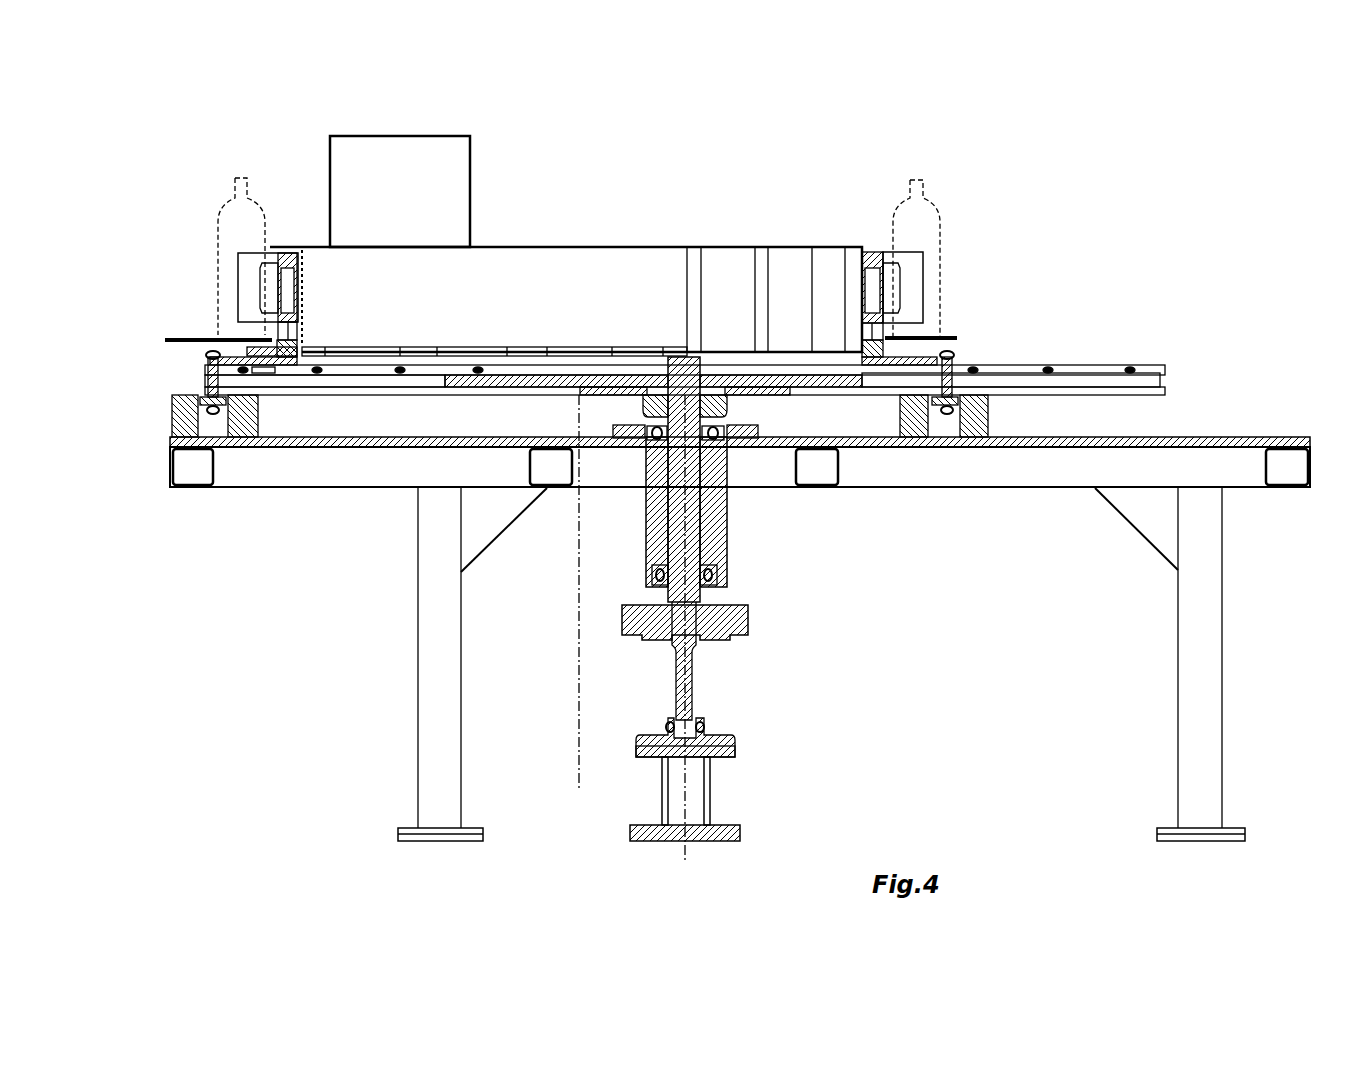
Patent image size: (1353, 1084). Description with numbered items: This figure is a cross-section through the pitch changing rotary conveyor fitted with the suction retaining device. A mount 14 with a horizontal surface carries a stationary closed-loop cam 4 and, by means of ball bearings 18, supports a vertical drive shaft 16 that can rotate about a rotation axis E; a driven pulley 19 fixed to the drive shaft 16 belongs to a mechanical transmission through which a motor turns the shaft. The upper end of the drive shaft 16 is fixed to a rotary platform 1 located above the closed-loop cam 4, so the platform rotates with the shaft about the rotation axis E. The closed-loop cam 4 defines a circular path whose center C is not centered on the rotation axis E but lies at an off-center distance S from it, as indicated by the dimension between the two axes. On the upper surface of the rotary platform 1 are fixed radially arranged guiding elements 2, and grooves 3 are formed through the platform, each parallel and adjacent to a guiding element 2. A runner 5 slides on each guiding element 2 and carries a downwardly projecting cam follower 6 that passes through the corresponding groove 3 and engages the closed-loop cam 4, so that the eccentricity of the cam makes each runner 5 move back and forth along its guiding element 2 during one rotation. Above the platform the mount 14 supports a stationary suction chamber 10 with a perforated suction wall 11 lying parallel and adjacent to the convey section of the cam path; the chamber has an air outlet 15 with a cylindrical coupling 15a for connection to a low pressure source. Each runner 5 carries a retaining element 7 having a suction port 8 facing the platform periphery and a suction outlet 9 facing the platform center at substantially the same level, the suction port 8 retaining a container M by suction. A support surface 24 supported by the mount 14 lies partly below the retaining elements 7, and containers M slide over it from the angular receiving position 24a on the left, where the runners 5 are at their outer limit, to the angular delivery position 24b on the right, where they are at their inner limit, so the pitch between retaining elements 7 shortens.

The rotary platform 1 is at (826, 397).
The guiding elements 2 is at (335, 372).
The grooves 3 is at (380, 390).
The closed-loop cam 4 is at (975, 410).
The runner 5 is at (280, 372).
The cam follower 6 is at (185, 412).
The retaining element 7 is at (262, 270).
The suction port 8 is at (258, 292).
The suction outlet 9 is at (297, 300).
The suction chamber 10 is at (600, 250).
The perforated suction wall 11 is at (305, 283).
The mount 14 is at (1243, 437).
The air outlet 15 is at (385, 140).
The cylindrical coupling 15a is at (480, 160).
The drive shaft 16 is at (705, 540).
The ball bearings 18 is at (715, 572).
The driven pulley 19 is at (750, 618).
The support surface 24 is at (176, 344).
The angular receiving position 24a is at (180, 278).
The angular delivery position 24b is at (974, 276).
The container M is at (222, 212).
The rotation axis E is at (690, 800).
The center C is at (577, 545).
The off-center distance S is at (685, 778).